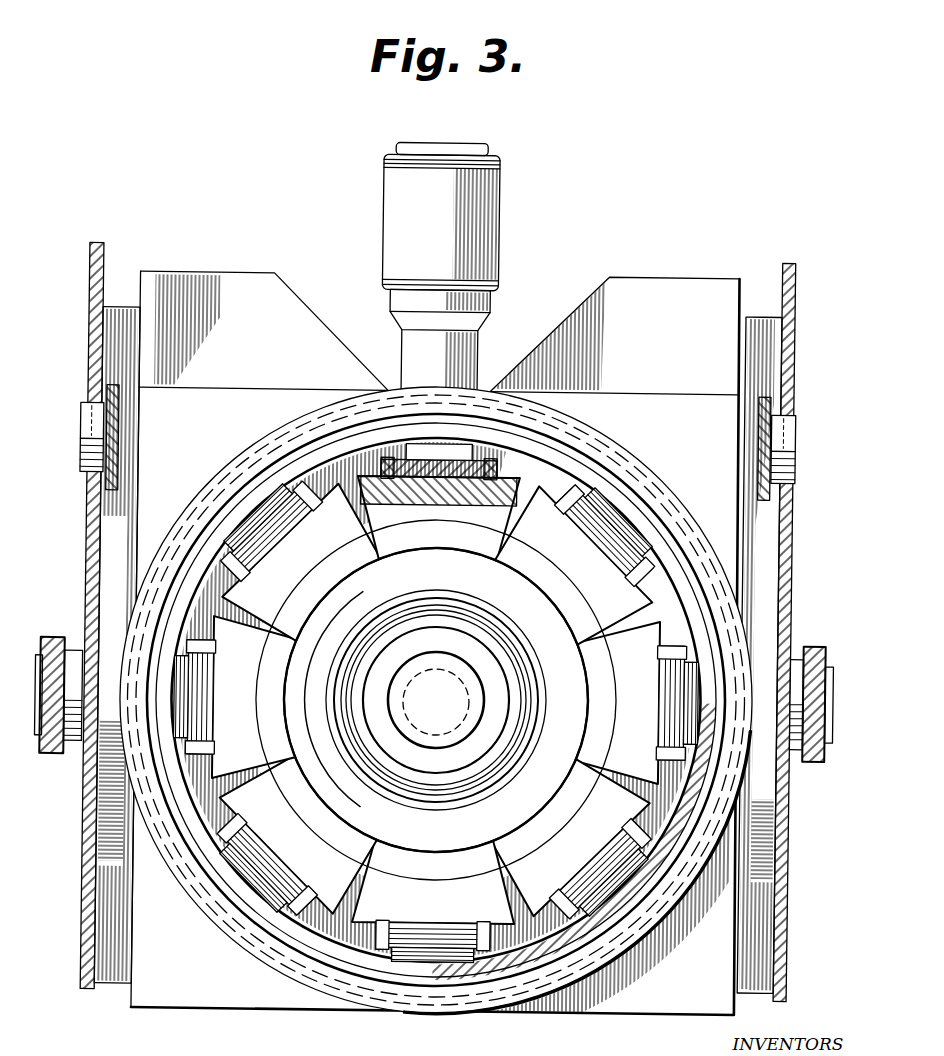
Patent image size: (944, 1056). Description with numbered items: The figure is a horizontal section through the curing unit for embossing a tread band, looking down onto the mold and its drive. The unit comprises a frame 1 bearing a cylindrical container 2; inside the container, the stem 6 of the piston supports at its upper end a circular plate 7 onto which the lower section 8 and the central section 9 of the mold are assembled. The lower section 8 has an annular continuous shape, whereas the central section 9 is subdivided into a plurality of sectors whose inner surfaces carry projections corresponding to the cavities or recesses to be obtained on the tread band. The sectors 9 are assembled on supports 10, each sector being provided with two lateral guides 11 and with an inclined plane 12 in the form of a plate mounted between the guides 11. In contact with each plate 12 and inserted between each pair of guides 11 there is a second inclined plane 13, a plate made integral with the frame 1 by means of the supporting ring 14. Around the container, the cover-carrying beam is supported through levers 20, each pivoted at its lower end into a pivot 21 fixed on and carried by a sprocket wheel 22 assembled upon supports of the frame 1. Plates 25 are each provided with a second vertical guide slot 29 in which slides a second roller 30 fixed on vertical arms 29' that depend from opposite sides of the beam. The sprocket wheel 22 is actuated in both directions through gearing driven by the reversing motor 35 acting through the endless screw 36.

The frame 1 is at (167, 999).
The cylindrical container 2 is at (304, 977).
The stem 6 is at (467, 718).
The circular plate 7 is at (405, 762).
The lower section of the mold 8 is at (390, 610).
The central section of the mold 9 is at (518, 842).
The supports 10 is at (492, 548).
The lateral guides 11 is at (377, 472).
The inclined plane 12 is at (397, 488).
The second inclined plane 13 is at (263, 522).
The supporting ring 14 is at (587, 468).
The lever 20 is at (54, 645).
The pivot 21 is at (71, 745).
The sprocket wheel 22 is at (106, 564).
The plates 25 is at (90, 305).
The second vertical guide slot 29 is at (437, 406).
The vertical arms 29' is at (435, 412).
The second roller 30 is at (82, 460).
The reversing motor 35 is at (391, 184).
The endless screw 36 is at (407, 352).